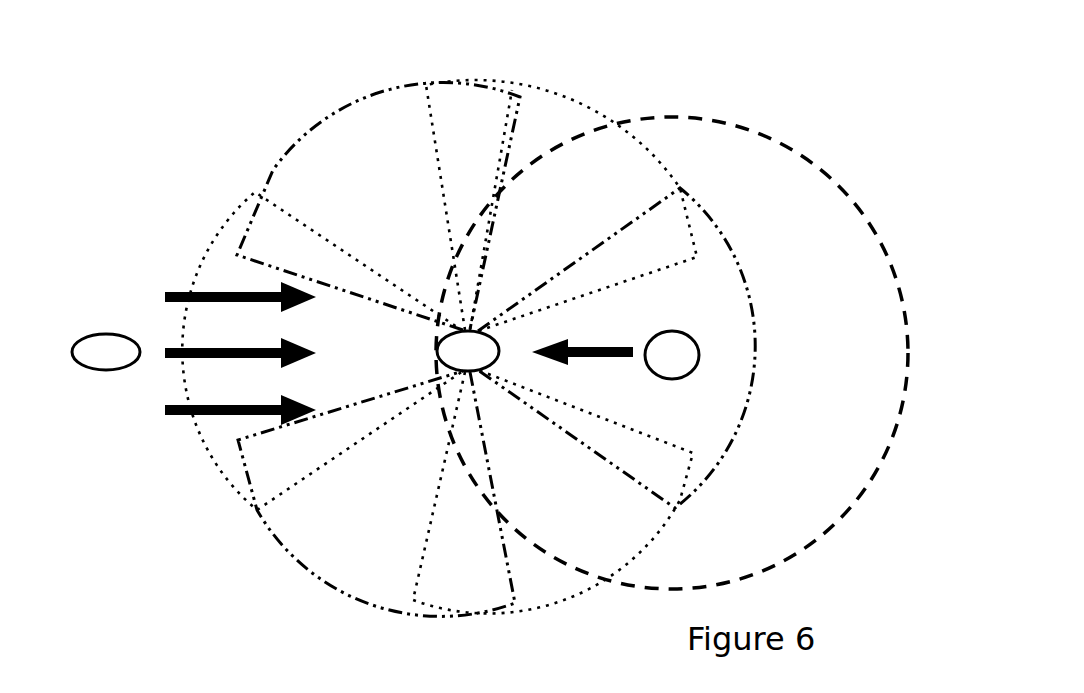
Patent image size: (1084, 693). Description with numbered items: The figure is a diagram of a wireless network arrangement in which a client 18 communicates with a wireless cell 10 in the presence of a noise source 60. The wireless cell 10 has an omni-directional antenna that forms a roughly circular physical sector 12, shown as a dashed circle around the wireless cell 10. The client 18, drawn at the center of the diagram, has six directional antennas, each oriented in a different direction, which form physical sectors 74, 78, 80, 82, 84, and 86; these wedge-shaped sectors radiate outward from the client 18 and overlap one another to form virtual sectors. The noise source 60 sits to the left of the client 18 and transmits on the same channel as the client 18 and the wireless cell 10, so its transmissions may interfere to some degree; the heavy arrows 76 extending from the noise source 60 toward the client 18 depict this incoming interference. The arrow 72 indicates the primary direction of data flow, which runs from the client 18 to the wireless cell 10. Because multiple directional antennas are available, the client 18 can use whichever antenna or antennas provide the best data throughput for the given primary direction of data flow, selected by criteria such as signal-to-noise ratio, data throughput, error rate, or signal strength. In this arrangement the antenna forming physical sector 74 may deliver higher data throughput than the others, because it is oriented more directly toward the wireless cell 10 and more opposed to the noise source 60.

The wireless cell 10 is at (657, 367).
The physical sector 12 is at (817, 168).
The client 18 is at (453, 363).
The noise source 60 is at (90, 364).
The arrow 72 is at (615, 347).
The physical sector 74 is at (752, 298).
The wind flow 76 is at (146, 275).
The physical sector 78 is at (567, 100).
The physical sector 80 is at (565, 600).
The physical sector 82 is at (305, 563).
The physical sector 84 is at (216, 467).
The physical sector 86 is at (340, 114).